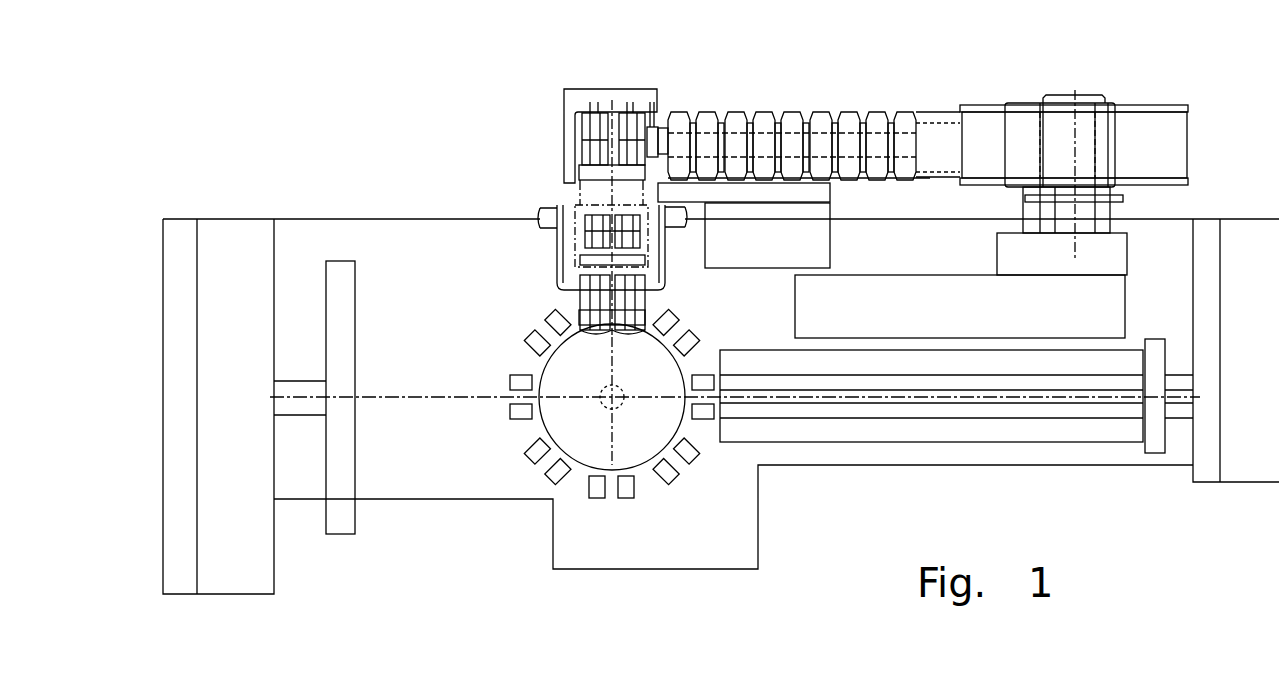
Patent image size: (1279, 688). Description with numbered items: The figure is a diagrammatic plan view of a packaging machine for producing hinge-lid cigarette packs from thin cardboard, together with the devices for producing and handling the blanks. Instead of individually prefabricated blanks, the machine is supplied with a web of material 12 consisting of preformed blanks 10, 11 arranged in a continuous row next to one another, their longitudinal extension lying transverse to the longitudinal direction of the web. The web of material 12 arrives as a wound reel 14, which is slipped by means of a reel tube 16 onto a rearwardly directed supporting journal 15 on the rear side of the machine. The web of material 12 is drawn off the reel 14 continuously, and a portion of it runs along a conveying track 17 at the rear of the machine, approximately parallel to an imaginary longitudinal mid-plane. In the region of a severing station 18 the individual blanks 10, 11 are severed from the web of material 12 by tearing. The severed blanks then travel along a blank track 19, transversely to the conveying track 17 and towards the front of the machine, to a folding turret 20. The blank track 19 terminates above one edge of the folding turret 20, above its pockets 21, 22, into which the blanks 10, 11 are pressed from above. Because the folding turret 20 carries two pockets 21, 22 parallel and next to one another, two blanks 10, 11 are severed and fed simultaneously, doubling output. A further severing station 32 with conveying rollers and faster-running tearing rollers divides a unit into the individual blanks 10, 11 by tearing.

The blank 10 is at (736, 118).
The blank 11 is at (770, 118).
The web of material 12 is at (882, 107).
The reel 14 is at (1208, 139).
The supporting journal 15 is at (1057, 100).
The reel tube 16 is at (1158, 105).
The conveying track 17 is at (828, 102).
The severing station 18 is at (667, 112).
The blank track 19 is at (563, 193).
The folding turret 20 is at (742, 478).
The pocket 21 is at (624, 498).
The pocket 22 is at (597, 498).
The further severing station 32 is at (576, 112).